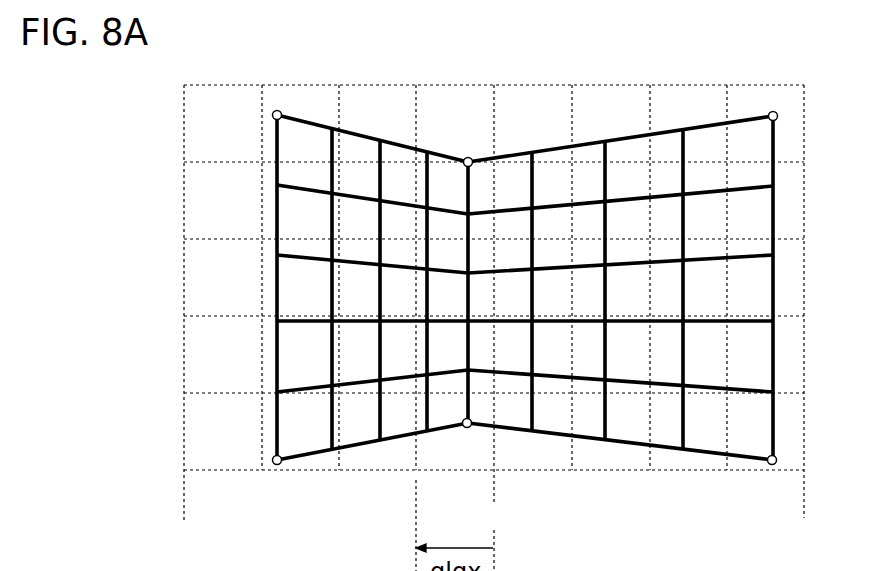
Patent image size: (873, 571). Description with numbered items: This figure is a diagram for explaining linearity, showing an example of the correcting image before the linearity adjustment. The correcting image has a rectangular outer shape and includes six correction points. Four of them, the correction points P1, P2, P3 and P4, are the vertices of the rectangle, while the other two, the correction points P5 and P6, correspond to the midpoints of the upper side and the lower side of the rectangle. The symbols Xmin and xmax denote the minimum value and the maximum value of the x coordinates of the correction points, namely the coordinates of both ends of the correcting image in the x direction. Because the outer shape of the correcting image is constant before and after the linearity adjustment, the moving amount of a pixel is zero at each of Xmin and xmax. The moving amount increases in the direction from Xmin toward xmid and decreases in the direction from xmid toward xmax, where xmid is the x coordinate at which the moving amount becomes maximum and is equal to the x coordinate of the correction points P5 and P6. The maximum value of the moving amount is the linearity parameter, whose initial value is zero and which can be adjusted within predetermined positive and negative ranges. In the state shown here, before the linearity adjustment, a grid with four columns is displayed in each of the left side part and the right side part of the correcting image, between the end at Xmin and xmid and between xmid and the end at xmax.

The correction point P1 is at (272, 114).
The correction point P2 is at (272, 461).
The correction point P3 is at (779, 112).
The correction point P4 is at (778, 462).
The correction point P5 is at (470, 156).
The correction point P6 is at (470, 430).
The minimum x coordinate Xmin is at (186, 537).
The middle x coordinate xmid is at (497, 522).
The maximum x coordinate xmax is at (806, 530).